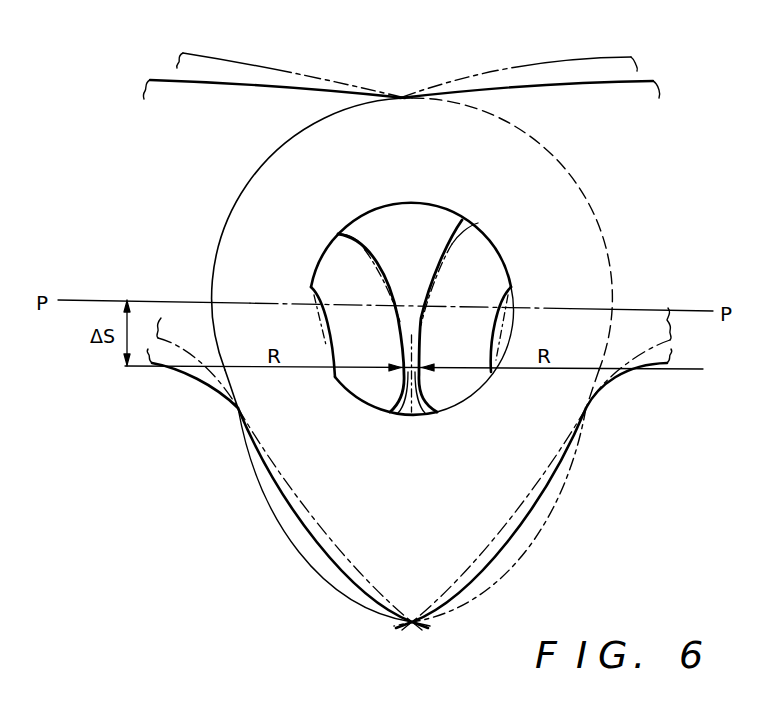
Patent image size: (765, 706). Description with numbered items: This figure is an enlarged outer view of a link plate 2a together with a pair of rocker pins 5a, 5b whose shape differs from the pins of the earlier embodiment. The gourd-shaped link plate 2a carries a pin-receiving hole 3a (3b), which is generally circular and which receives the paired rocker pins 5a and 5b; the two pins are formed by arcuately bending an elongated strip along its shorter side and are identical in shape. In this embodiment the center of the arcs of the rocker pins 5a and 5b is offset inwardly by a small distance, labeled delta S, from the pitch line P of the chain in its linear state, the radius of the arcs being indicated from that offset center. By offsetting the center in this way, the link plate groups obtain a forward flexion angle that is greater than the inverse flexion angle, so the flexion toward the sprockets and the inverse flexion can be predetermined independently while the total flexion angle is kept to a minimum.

The link plate 2a is at (258, 113).
The front pin-receiving hole 3a is at (412, 212).
The rear pin-receiving hole 3b is at (397, 228).
The rocker pin 5a is at (363, 393).
The rocker pin 5b is at (457, 388).